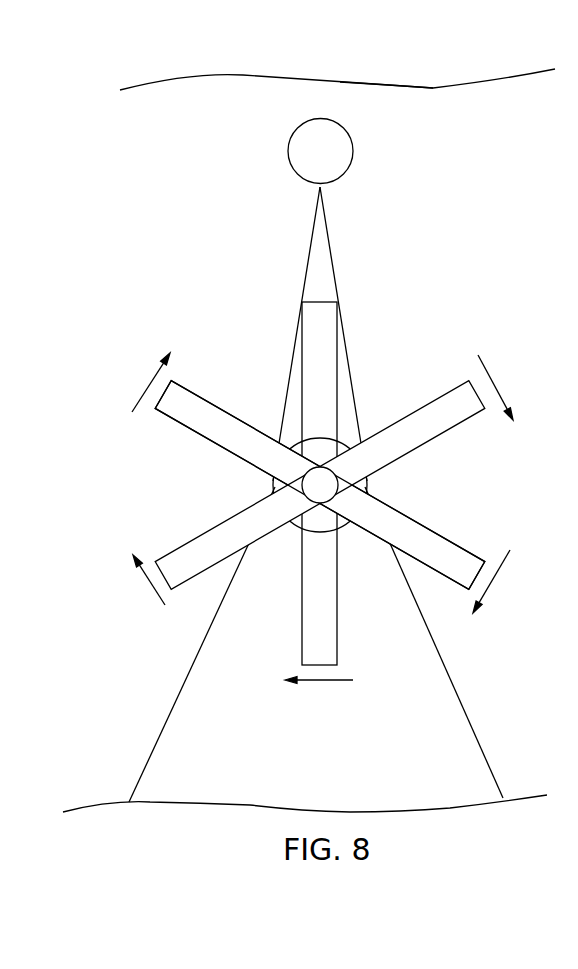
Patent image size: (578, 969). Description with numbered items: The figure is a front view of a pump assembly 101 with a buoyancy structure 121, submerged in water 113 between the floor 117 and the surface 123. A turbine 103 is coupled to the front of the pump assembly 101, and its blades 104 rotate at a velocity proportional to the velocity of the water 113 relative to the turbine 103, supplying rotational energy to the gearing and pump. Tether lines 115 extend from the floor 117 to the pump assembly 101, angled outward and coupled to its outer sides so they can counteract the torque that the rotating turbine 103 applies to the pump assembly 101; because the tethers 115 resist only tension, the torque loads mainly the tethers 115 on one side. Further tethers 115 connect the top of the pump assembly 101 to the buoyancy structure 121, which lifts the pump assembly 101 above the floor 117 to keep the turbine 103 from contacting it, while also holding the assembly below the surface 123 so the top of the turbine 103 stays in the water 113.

The pump assembly 101 is at (322, 493).
The turbine 103 is at (407, 391).
The blades 104 is at (180, 397).
The water 113 is at (185, 97).
The tether lines 115 is at (342, 298).
The floor 117 is at (343, 813).
The buoyancy structure 121 is at (335, 138).
The surface 123 is at (362, 86).